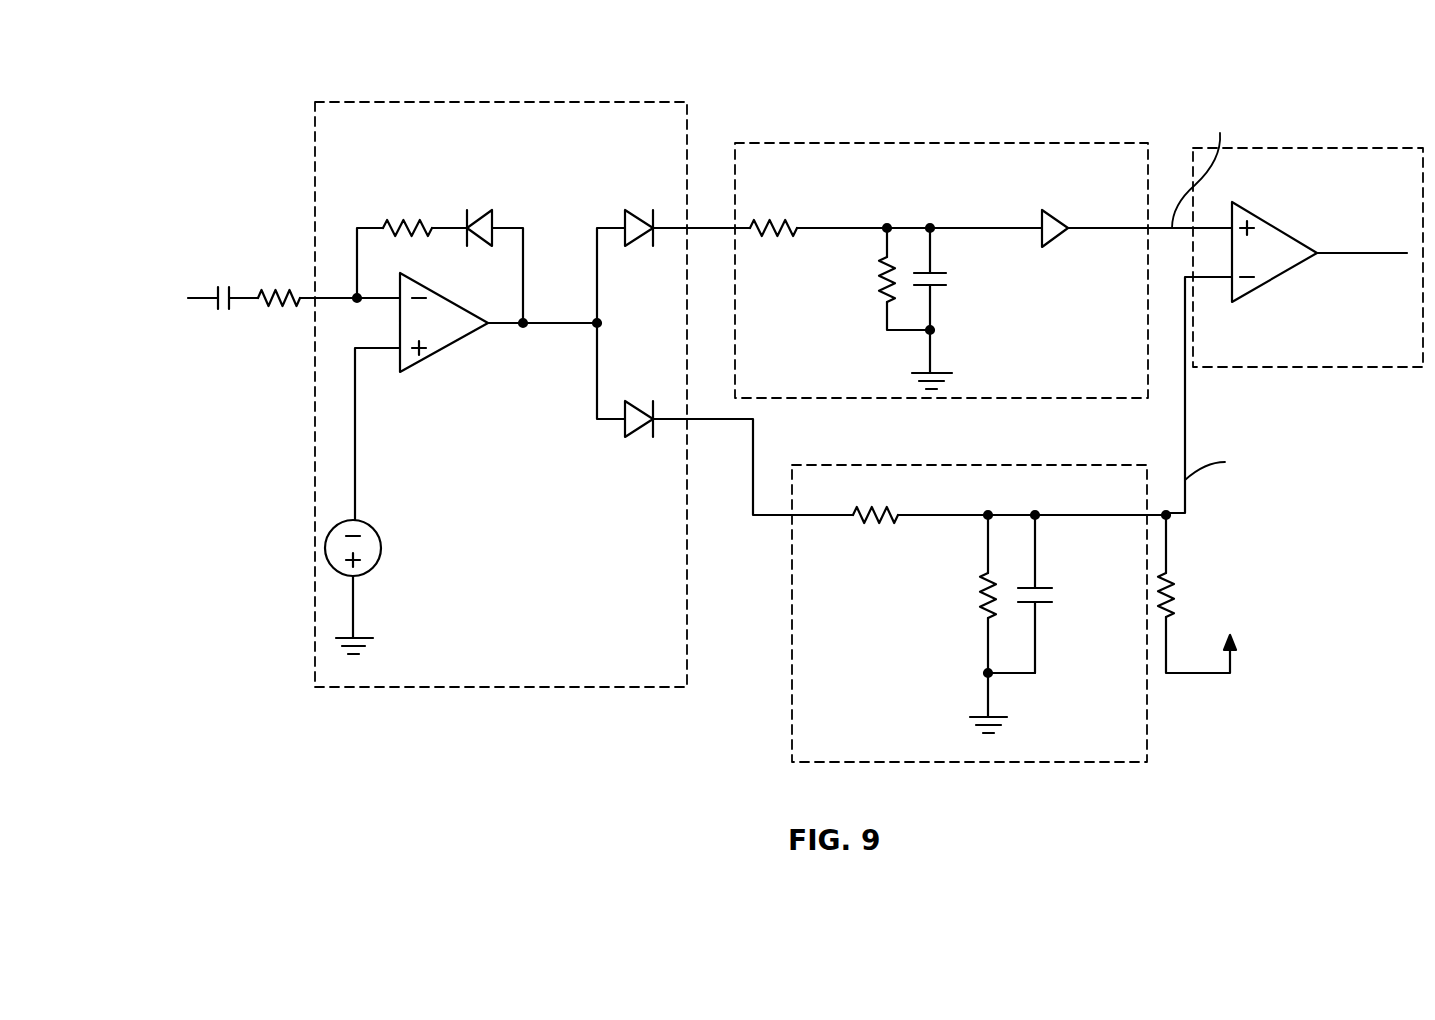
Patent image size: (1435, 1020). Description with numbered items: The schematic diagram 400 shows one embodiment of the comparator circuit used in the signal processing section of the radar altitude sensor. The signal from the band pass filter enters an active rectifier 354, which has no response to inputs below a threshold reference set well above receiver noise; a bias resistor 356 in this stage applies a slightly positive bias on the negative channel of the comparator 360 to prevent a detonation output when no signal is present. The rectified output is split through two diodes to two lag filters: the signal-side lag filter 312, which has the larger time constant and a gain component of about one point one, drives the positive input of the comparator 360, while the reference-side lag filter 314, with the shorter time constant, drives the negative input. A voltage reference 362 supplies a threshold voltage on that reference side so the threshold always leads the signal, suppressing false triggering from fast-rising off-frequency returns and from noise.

The schematic diagram 400 is at (262, 52).
The active rectifier 354 is at (501, 376).
The bias resistor 356 is at (444, 102).
The low pass lag filter 312 is at (808, 143).
The low pass lag filter 314 is at (865, 762).
The comparator 360 is at (1265, 367).
The voltage reference 362 is at (1172, 598).